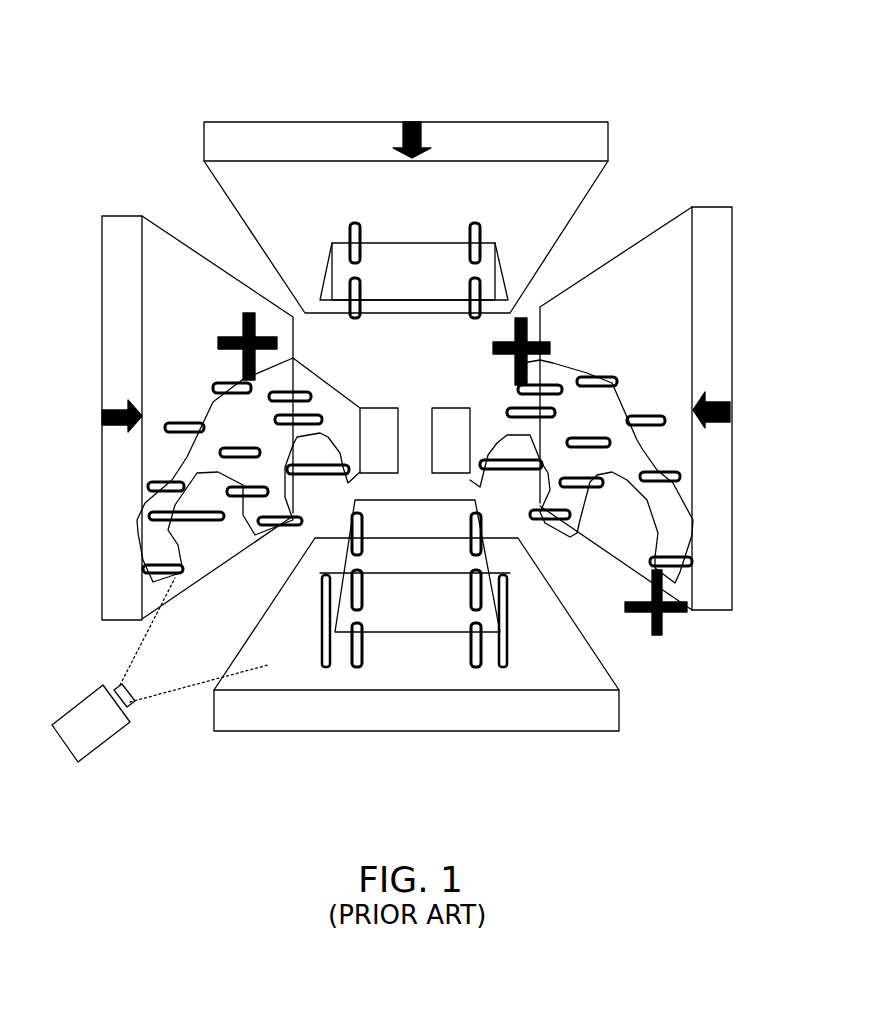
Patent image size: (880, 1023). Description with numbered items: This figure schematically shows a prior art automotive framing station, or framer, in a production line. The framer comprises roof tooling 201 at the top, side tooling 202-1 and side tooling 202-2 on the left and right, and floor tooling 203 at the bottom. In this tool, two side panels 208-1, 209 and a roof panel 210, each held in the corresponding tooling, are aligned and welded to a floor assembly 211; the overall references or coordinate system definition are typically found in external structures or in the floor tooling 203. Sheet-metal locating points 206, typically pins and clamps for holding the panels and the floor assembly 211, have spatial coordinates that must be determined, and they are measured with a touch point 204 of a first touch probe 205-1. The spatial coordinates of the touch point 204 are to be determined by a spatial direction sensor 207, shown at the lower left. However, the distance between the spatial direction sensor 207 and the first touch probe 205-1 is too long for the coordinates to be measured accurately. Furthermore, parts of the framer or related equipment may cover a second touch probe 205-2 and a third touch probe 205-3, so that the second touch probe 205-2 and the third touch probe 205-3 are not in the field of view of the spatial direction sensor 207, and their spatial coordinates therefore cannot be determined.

The roof tooling 201 is at (323, 180).
The roof panel 210 is at (433, 257).
The side tooling 202-1 is at (158, 235).
The side tooling 202-2 is at (643, 258).
The first touch probe 205-1 is at (527, 340).
The second touch probe 205-2 is at (238, 333).
The third touch probe 205-3 is at (657, 643).
The touch point 204 is at (468, 409).
The sheet-metal locating points 206 is at (262, 450).
The side panel 208-1 is at (218, 418).
The side panel 209 is at (603, 418).
The spatial direction sensor 207 is at (80, 715).
The floor assembly 211 is at (400, 593).
The floor tooling 203 is at (567, 673).